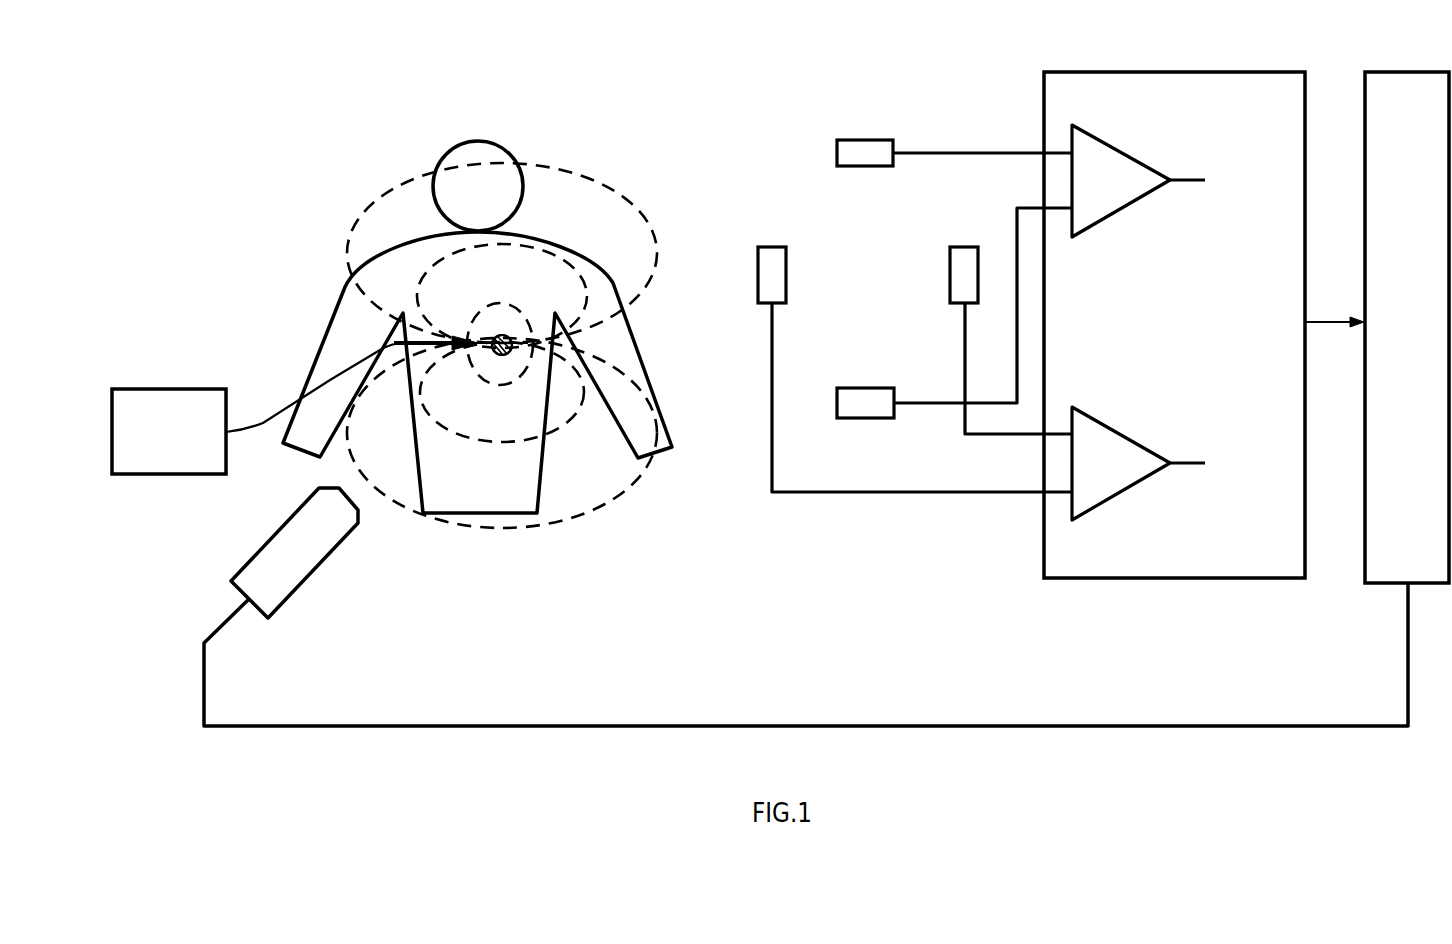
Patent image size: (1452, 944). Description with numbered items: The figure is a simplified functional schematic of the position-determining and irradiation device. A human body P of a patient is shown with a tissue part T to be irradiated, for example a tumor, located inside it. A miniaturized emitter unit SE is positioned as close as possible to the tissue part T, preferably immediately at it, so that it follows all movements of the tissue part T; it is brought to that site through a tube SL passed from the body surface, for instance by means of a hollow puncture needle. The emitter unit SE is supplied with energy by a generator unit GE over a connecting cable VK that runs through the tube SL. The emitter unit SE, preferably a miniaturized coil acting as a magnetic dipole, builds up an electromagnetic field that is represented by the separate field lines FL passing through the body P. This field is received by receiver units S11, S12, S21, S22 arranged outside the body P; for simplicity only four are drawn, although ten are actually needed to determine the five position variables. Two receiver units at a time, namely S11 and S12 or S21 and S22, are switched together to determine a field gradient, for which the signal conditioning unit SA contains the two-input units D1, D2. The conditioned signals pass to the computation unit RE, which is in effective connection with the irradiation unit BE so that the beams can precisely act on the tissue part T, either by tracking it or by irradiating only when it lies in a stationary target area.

The human body P is at (427, 237).
The field lines FL is at (567, 263).
The tube SL is at (425, 340).
The tissue part T is at (497, 335).
The emitter unit SE is at (506, 352).
The connecting cable VK is at (266, 418).
The generator unit GE is at (169, 431).
The irradiation unit BE is at (806, 607).
The receiver unit S11 is at (867, 139).
The receiver unit S12 is at (868, 419).
The receiver unit S21 is at (950, 278).
The receiver unit S22 is at (758, 276).
The signal conditioning unit SA is at (1204, 325).
The application unit D1 is at (1138, 181).
The application unit D2 is at (1138, 463).
The computation unit RE is at (1407, 327).